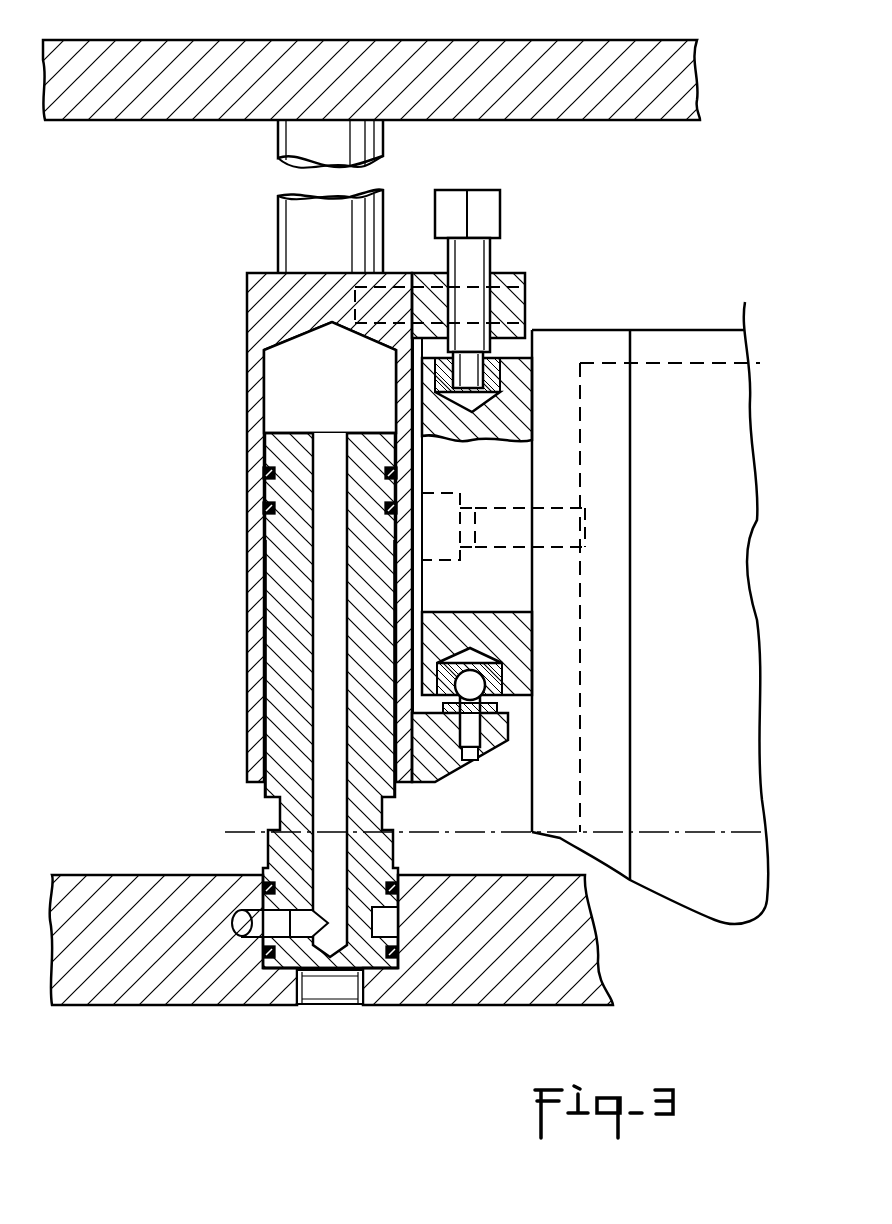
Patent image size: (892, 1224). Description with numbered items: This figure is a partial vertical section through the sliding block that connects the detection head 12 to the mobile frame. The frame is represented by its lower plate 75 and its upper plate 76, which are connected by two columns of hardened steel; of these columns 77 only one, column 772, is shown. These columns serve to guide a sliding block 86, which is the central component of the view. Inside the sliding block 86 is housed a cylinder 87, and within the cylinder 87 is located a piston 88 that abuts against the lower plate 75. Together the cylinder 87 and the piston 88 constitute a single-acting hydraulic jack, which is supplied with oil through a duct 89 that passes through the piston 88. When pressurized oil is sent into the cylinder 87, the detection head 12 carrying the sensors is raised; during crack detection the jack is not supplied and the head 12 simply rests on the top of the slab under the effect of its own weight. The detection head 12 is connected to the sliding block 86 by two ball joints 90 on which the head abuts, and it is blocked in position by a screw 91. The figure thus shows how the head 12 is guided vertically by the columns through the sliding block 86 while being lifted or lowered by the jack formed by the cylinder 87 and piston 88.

The detection head 12 is at (700, 582).
The lower plate 75 is at (483, 1005).
The upper plate 76 is at (603, 58).
The column of hardened steel 77 is at (300, 196).
The column of hardened steel 772 is at (300, 217).
The sliding block 86 is at (250, 295).
The cylinder 87 is at (336, 393).
The piston 88 is at (283, 597).
The duct 89 is at (326, 647).
The ball joint 90 is at (486, 684).
The screw 91 is at (488, 203).